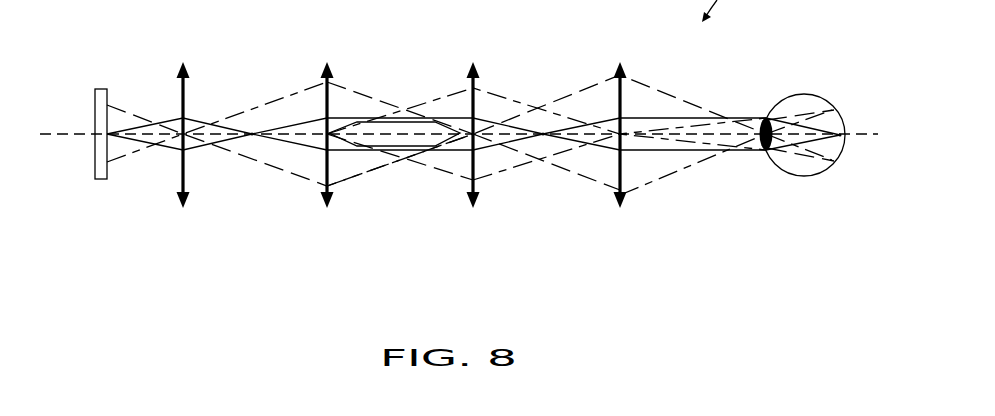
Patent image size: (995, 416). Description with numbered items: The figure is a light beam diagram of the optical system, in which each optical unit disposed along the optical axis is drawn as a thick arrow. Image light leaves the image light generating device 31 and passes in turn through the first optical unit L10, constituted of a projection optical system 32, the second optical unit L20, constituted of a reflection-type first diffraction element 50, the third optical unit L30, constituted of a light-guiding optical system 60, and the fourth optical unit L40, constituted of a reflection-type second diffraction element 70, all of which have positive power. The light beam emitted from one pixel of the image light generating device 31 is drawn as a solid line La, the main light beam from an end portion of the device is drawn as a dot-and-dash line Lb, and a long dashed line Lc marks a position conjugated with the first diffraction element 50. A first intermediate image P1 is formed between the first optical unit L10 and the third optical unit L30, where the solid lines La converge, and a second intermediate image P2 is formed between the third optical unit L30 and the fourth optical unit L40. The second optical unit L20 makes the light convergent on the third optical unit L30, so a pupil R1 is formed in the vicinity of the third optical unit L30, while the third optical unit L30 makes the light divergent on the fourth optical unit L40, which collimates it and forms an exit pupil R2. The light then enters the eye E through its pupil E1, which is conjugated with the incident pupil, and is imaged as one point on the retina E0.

The image light generating device 31 is at (95, 106).
The solid line La is at (196, 119).
The dot-and-dash line Lb is at (378, 99).
The long dashed line Lc is at (498, 97).
The first intermediate image P1 is at (253, 133).
The second intermediate image P2 is at (543, 133).
The pupil R1 is at (467, 133).
The exit pupil R2 is at (763, 146).
The first optical unit L10 is at (187, 166).
The projection optical system 32 is at (187, 166).
The second optical unit L20 is at (330, 166).
The first diffraction element 50 is at (330, 166).
The third optical unit L30 is at (475, 166).
The light-guiding optical system 60 is at (475, 166).
The fourth optical unit L40 is at (624, 166).
The second diffraction element 70 is at (624, 166).
The eye E is at (800, 94).
The pupil of the eye E1 is at (763, 118).
The retina E0 is at (845, 133).